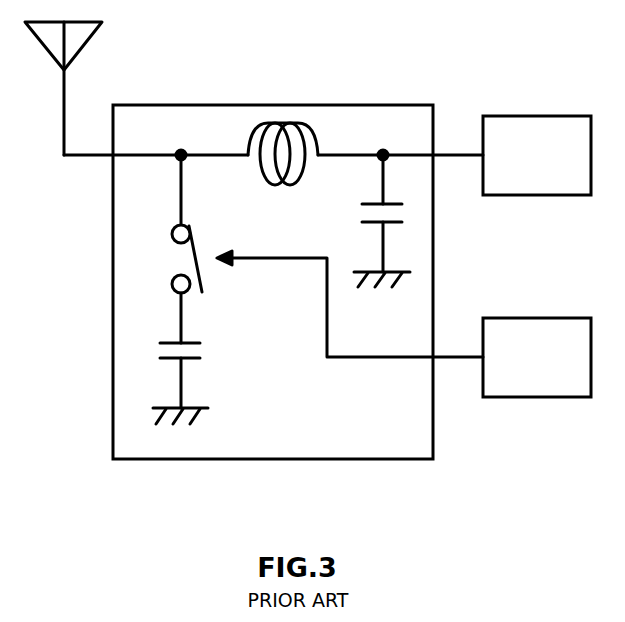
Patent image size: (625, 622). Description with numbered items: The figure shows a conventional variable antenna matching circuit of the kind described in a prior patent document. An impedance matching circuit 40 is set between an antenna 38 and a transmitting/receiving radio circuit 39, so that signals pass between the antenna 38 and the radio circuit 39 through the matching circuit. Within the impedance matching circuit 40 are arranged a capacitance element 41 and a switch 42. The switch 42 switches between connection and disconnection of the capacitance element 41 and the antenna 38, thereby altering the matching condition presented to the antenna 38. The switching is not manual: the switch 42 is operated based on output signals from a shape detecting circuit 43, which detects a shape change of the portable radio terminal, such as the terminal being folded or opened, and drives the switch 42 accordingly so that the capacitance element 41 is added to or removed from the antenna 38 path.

The antenna 38 is at (97, 44).
The transmitting/receiving radio circuit 39 is at (537, 155).
The impedance matching circuit 40 is at (273, 264).
The capacitance element 41 is at (206, 378).
The switch 42 is at (164, 249).
The shape detecting circuit 43 is at (404, 324).